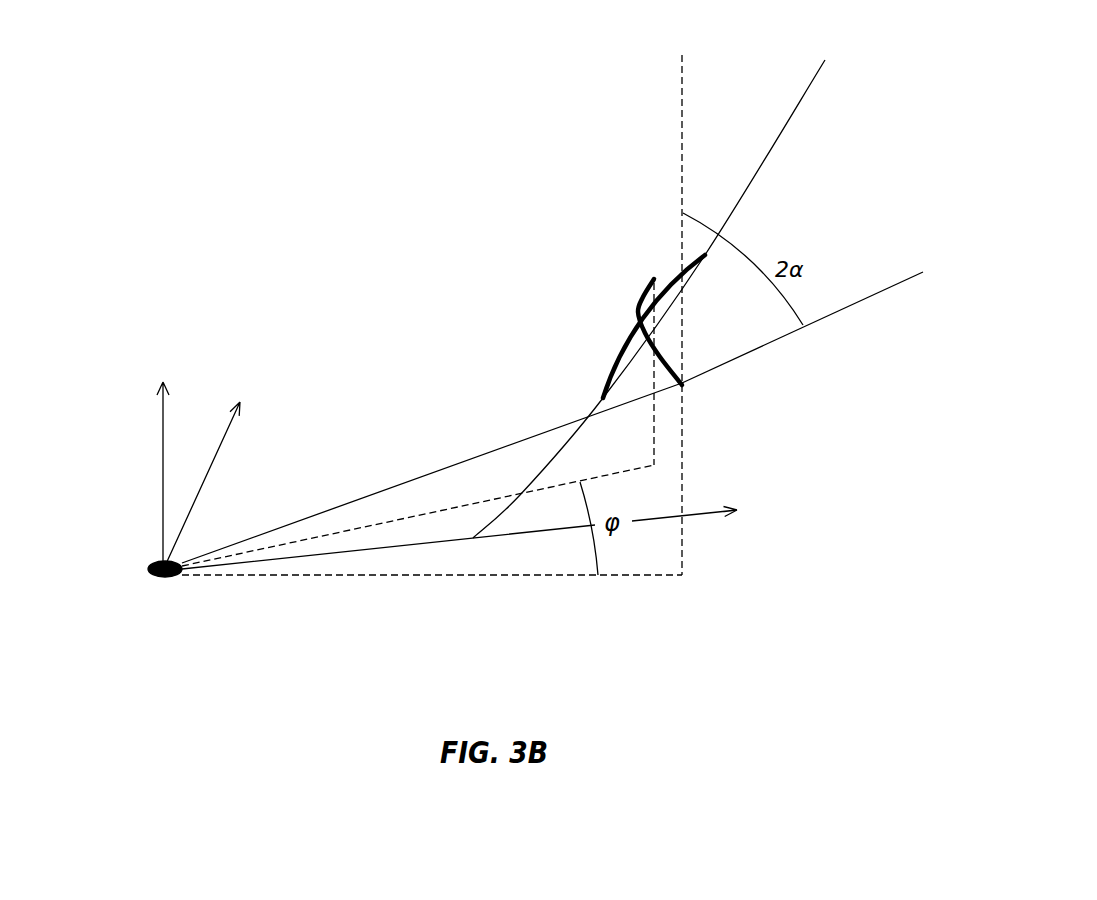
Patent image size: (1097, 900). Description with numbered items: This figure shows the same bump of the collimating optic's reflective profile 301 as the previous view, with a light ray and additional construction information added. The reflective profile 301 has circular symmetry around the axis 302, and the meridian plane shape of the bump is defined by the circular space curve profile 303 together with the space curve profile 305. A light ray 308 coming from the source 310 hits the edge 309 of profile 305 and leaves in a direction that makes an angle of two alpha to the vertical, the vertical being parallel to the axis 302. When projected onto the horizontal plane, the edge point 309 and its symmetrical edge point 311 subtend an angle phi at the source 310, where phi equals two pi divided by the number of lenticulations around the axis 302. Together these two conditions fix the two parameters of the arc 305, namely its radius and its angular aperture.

The reflective profile 301 is at (795, 123).
The axis 302 is at (153, 422).
The circular space curve profile 303 is at (615, 362).
The space curve profile 305 is at (633, 297).
The light ray 308 is at (453, 457).
The edge 309 is at (690, 388).
The source 310 is at (158, 591).
The symmetrical edge point 311 is at (652, 275).